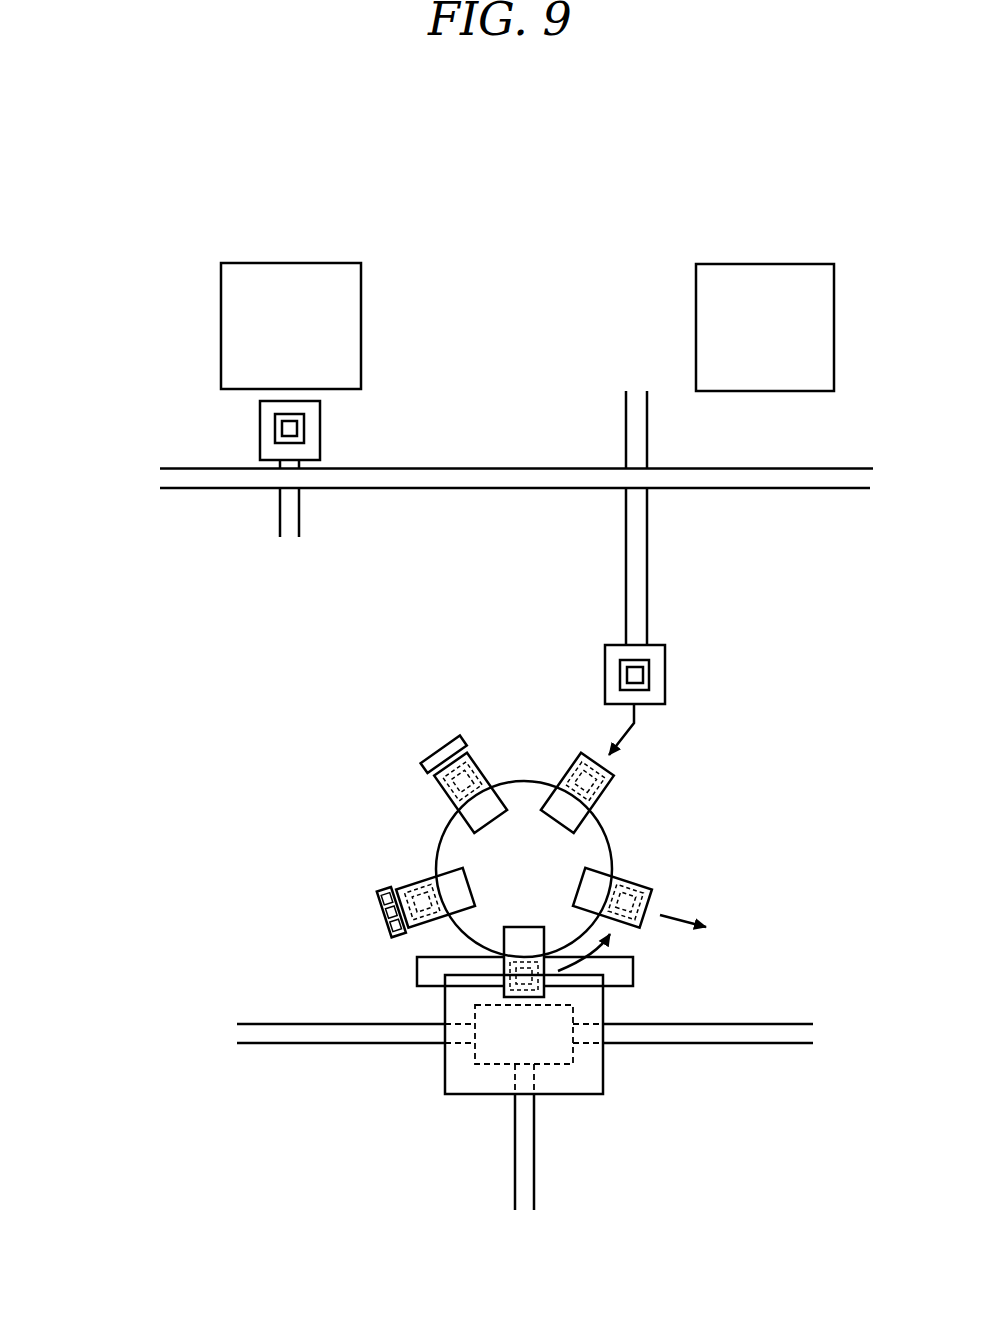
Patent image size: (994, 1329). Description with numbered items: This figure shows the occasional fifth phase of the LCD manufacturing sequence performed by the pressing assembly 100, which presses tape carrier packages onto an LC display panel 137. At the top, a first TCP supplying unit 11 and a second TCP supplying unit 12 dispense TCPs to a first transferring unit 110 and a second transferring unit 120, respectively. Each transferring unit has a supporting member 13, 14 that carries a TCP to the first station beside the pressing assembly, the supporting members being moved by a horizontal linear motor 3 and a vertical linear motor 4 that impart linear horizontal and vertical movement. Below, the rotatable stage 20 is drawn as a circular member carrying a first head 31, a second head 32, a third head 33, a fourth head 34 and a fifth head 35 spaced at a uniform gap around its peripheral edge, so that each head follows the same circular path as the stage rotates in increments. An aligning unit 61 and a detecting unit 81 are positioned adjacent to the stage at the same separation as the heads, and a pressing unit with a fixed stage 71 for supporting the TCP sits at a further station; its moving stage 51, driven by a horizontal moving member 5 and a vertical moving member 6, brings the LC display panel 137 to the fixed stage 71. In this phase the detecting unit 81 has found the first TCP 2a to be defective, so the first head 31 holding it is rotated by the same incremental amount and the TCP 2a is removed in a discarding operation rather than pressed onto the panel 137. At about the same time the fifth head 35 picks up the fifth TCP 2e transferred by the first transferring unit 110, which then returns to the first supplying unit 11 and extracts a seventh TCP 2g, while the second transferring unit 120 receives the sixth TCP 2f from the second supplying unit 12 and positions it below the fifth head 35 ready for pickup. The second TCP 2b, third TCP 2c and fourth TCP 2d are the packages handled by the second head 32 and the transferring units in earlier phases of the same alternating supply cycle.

The first TCP supplying unit 11 is at (361, 333).
The second TCP supplying unit 12 is at (834, 335).
The supporting member 13 is at (320, 429).
The supporting member 14 is at (657, 705).
The first TCP 2a is at (642, 925).
The second TCP 2b is at (500, 985).
The third TCP 2c is at (388, 890).
The fourth TCP 2d is at (436, 787).
The fifth TCP 2e is at (588, 765).
The sixth TCP 2f is at (650, 676).
The seventh TCP 2g is at (275, 431).
The horizontal linear motor 3 is at (553, 468).
The vertical linear motor 4 is at (647, 431).
The horizontal moving member 5 is at (658, 1045).
The vertical moving member 6 is at (535, 1152).
The rotatable stage 20 is at (610, 838).
The first head 31 is at (650, 888).
The second head 32 is at (490, 965).
The third head 33 is at (420, 885).
The fourth head 34 is at (478, 759).
The fifth head 35 is at (614, 786).
The moving stage 51 is at (490, 1065).
The aligning unit 61 is at (438, 748).
The fixed stage 71 is at (633, 982).
The detecting unit 81 is at (384, 915).
The pressing assembly 100 is at (252, 879).
The first transferring unit 110 is at (168, 436).
The second transferring unit 120 is at (762, 675).
The LC display panel 137 is at (603, 1094).